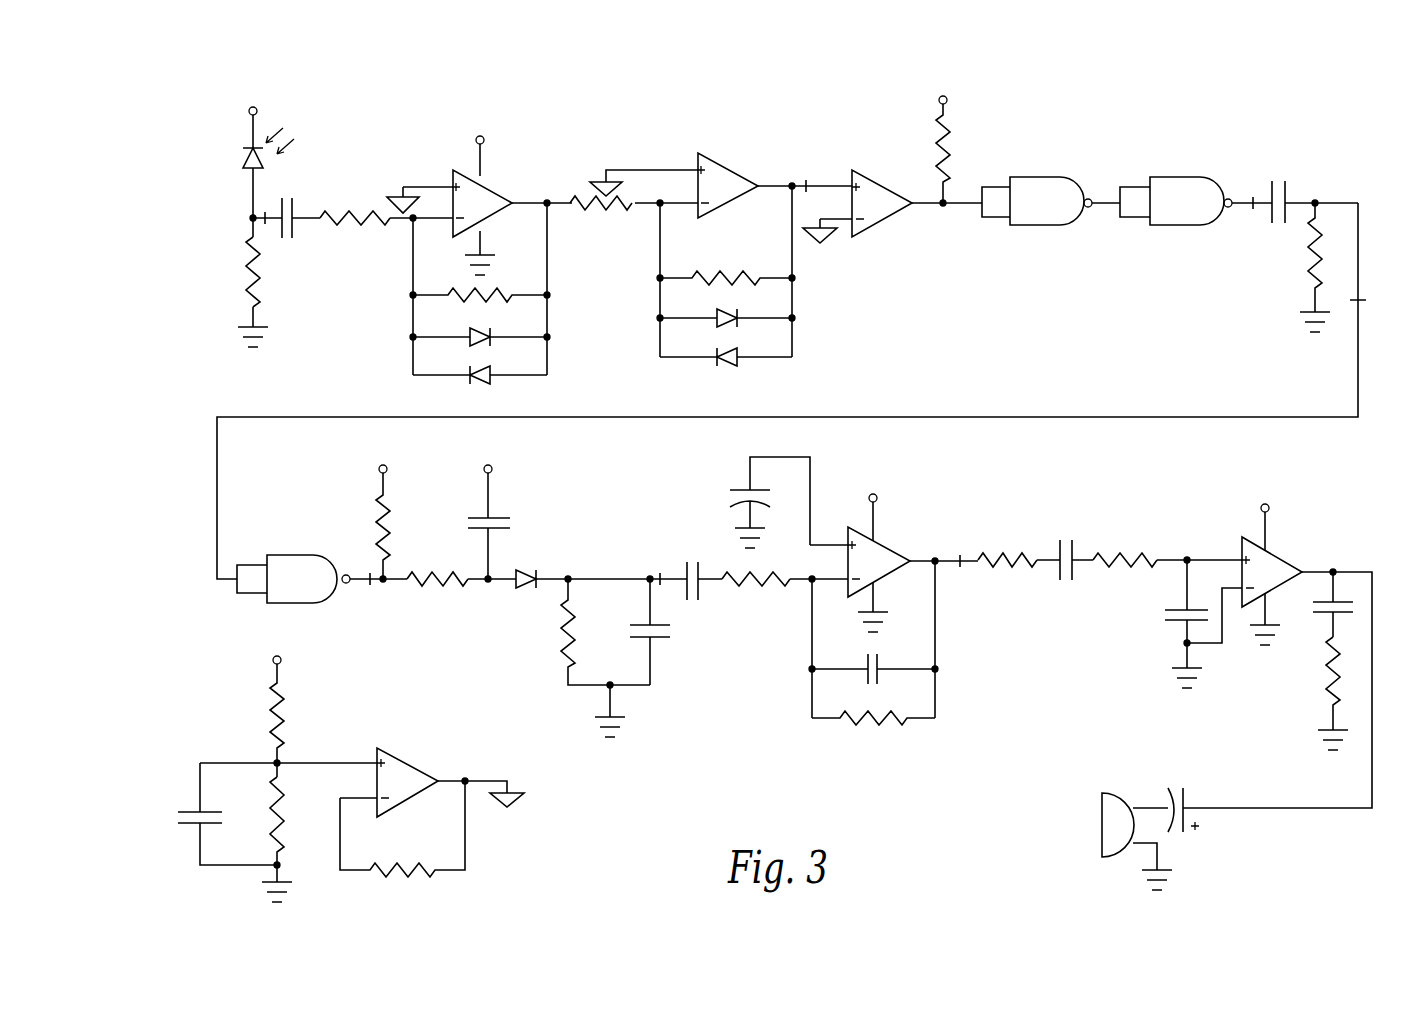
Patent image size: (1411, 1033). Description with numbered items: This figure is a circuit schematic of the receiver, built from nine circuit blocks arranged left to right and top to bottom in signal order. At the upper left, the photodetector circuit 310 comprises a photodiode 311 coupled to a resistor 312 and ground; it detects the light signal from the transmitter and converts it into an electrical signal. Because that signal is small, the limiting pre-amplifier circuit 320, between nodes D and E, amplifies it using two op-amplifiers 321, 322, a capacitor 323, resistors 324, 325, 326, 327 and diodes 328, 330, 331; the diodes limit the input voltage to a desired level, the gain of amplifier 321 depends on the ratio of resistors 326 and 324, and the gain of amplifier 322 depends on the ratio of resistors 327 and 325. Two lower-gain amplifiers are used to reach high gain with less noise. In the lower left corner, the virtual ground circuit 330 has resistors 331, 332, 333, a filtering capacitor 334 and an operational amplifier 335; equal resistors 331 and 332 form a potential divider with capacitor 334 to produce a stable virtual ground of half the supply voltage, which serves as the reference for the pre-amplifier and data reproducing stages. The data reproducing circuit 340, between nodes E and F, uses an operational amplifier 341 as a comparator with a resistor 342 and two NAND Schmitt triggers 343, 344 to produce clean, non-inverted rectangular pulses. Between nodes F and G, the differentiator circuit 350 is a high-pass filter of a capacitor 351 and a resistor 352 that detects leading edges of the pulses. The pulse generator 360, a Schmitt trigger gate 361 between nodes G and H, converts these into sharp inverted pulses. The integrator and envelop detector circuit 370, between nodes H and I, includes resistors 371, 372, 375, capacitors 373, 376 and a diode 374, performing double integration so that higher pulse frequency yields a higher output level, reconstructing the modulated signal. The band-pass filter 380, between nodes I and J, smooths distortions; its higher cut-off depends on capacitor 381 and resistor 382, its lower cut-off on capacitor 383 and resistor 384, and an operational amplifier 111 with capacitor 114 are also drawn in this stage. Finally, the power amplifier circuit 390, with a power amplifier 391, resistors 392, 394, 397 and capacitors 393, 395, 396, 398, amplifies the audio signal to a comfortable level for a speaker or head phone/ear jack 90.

The photodetector circuit 310 is at (221, 321).
The photodiode 311 is at (243, 152).
The resistor 312 is at (247, 280).
The limiting pre-amplifier circuit 320 is at (626, 322).
The op-amplifier 321 is at (486, 178).
The op-amplifier 322 is at (725, 167).
The capacitor 323 is at (294, 238).
The resistor 324 is at (354, 228).
The resistor 325 is at (585, 222).
The resistor 326 is at (500, 291).
The resistor 327 is at (468, 371).
The diode 328 is at (467, 333).
The virtual ground circuit 330 is at (716, 315).
The resistor 331 is at (717, 352).
The resistor 332 is at (272, 831).
The resistor 333 is at (414, 861).
The filtering capacitor 334 is at (196, 808).
The operational amplifier 335 is at (411, 761).
The data reproducing circuit 340 is at (1022, 177).
The operational amplifier 341 is at (873, 187).
The resistor 342 is at (948, 150).
The NAND Schmitt trigger 343 is at (1045, 185).
The NAND Schmitt trigger 344 is at (1178, 188).
The differentiator circuit 350 is at (1157, 131).
The capacitor 351 is at (1290, 196).
The resistor 352 is at (1306, 266).
The pulse generator 360 is at (217, 605).
The Schmitt trigger gate 361 is at (313, 565).
The integrator and envelop detector circuit 370 is at (399, 633).
The resistor 371 is at (378, 528).
The resistor 372 is at (441, 572).
The capacitor 373 is at (504, 518).
The diode 374 is at (535, 569).
The resistor 375 is at (580, 631).
The capacitor 376 is at (656, 640).
The band-pass filter 380 is at (794, 707).
The capacitor 381 is at (689, 560).
The resistor 382 is at (779, 592).
The capacitor 383 is at (880, 663).
The resistor 384 is at (881, 712).
The capacitor 114 is at (745, 489).
The operational amplifier 111 is at (888, 540).
The power amplifier circuit 390 is at (1182, 682).
The power amplifier 391 is at (1285, 555).
The resistor 392 is at (1002, 555).
The capacitor 393 is at (1077, 575).
The resistor 394 is at (1148, 550).
The capacitor 395 is at (1180, 624).
The capacitor 396 is at (1326, 614).
The resistor 397 is at (1322, 690).
The capacitor 398 is at (1187, 802).
The speaker or head phone/ear jack 90 is at (1100, 795).